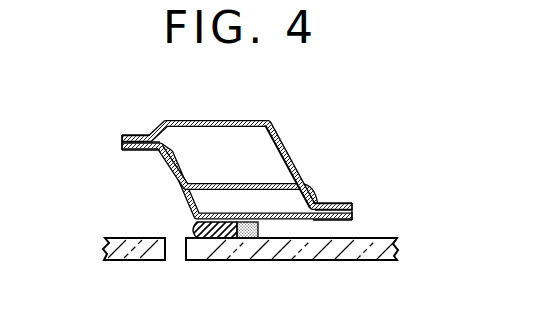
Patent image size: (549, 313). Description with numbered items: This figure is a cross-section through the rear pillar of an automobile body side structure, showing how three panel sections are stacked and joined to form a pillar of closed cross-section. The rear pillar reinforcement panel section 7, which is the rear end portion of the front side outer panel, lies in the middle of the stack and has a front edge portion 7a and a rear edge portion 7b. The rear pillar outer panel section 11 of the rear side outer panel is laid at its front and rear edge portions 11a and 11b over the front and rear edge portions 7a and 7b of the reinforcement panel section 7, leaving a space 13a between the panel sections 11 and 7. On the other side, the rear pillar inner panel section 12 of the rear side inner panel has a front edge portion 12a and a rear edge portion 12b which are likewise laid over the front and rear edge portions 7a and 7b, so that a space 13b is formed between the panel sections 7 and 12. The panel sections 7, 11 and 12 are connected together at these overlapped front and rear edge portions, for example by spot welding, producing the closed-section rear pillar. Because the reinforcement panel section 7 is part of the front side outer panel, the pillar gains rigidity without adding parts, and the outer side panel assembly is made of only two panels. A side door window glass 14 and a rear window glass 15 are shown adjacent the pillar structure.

The rear pillar reinforcement panel section 7 is at (213, 196).
The front edge portion of rear pillar reinforcement panel section 7a is at (121, 137).
The rear edge portion of rear pillar reinforcement panel section 7b is at (353, 207).
The rear pillar outer panel section 11 is at (280, 221).
The front edge portion of rear pillar outer panel section 11a is at (133, 153).
The rear edge portion of rear pillar outer panel section 11b is at (349, 223).
The rear pillar inner panel section 12 is at (233, 120).
The front edge portion of rear pillar inner panel section 12a is at (136, 135).
The rear edge portion of rear pillar inner panel section 12b is at (330, 201).
The space 13a is at (233, 207).
The space 13b is at (270, 152).
The side door window glass 14 is at (120, 261).
The rear window glass 15 is at (347, 261).